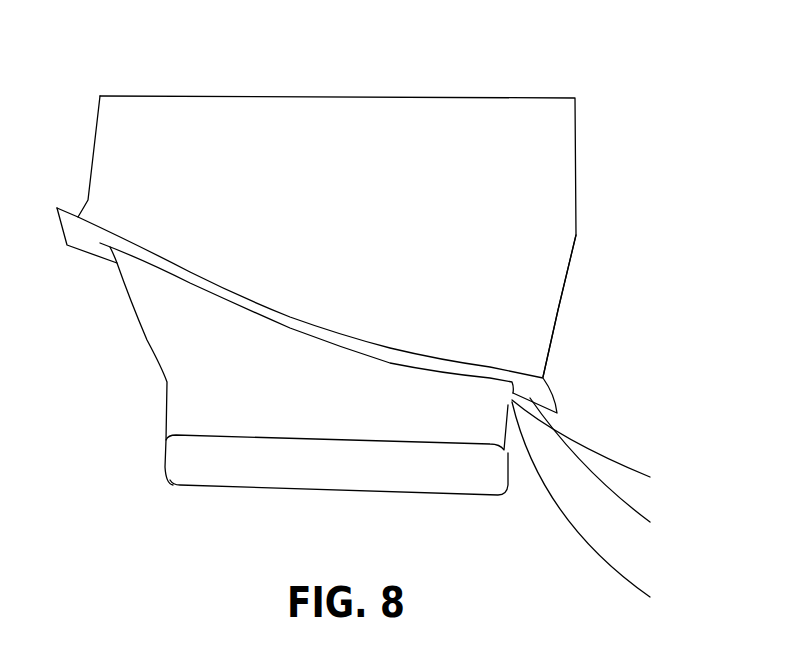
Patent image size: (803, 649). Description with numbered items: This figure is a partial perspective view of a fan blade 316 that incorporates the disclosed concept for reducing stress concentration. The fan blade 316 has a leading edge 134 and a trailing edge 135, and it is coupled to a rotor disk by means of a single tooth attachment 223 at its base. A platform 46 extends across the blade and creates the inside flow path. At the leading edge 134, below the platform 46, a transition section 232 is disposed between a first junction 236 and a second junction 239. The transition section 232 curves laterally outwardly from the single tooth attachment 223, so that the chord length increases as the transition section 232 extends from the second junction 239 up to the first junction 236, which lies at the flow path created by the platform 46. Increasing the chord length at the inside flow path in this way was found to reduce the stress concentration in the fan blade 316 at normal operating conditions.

The platform 46 is at (213, 282).
The leading edge 134 is at (558, 312).
The trailing edge 135 is at (125, 296).
The single tooth attachment 223 is at (360, 493).
The transition section 232 is at (611, 466).
The first junction 236 is at (602, 445).
The second junction 239 is at (602, 506).
The fan blade 316 is at (622, 183).